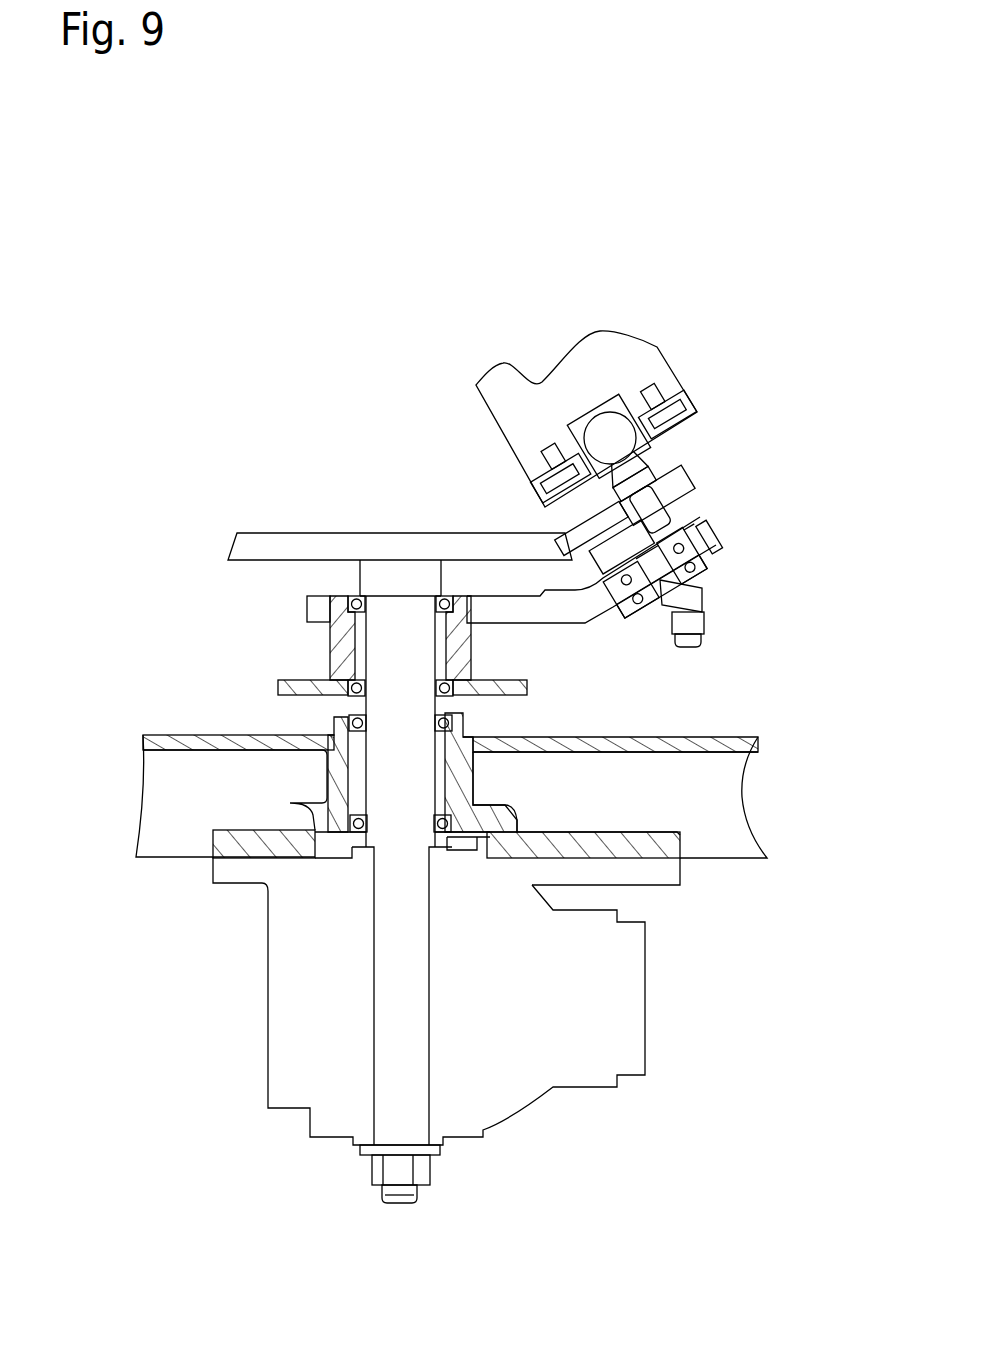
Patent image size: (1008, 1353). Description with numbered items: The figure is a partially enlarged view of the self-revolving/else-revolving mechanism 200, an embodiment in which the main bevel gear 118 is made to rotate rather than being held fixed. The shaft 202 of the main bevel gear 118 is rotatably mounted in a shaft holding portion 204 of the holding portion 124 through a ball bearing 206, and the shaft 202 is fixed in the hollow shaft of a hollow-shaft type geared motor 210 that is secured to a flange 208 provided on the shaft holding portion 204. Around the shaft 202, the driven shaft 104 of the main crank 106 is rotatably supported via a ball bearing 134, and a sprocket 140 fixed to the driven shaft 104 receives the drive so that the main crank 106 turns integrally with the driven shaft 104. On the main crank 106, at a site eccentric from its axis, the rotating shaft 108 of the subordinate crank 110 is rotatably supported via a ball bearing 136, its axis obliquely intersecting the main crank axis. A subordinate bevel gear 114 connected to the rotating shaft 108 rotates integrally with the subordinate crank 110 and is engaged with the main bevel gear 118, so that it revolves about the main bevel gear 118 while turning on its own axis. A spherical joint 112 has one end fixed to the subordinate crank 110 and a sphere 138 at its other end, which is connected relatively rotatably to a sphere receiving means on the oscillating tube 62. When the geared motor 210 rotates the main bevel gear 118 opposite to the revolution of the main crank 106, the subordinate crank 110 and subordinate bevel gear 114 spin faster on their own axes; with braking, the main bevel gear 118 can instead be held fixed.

The oscillating tube 62 is at (604, 345).
The sphere 138 is at (607, 432).
The spherical joint 112 is at (660, 465).
The subordinate bevel gear 114 is at (665, 478).
The subordinate crank 110 is at (683, 512).
The ball bearing 136 is at (700, 573).
The rotating shaft 108 is at (707, 597).
The main bevel gear 118 is at (290, 533).
The ball bearing 134 is at (358, 598).
The driven shaft 104 is at (333, 663).
The sprocket 140 is at (300, 693).
The main crank 106 is at (591, 626).
The holding portion 124 is at (702, 754).
The shaft holding portion 204 is at (474, 778).
The ball bearing 206 is at (340, 785).
The flange 208 is at (647, 872).
The hollow-shaft type geared motor 210 is at (493, 1042).
The self-revolving/else-revolving mechanism 200 is at (197, 925).
The shaft 202 is at (393, 1023).